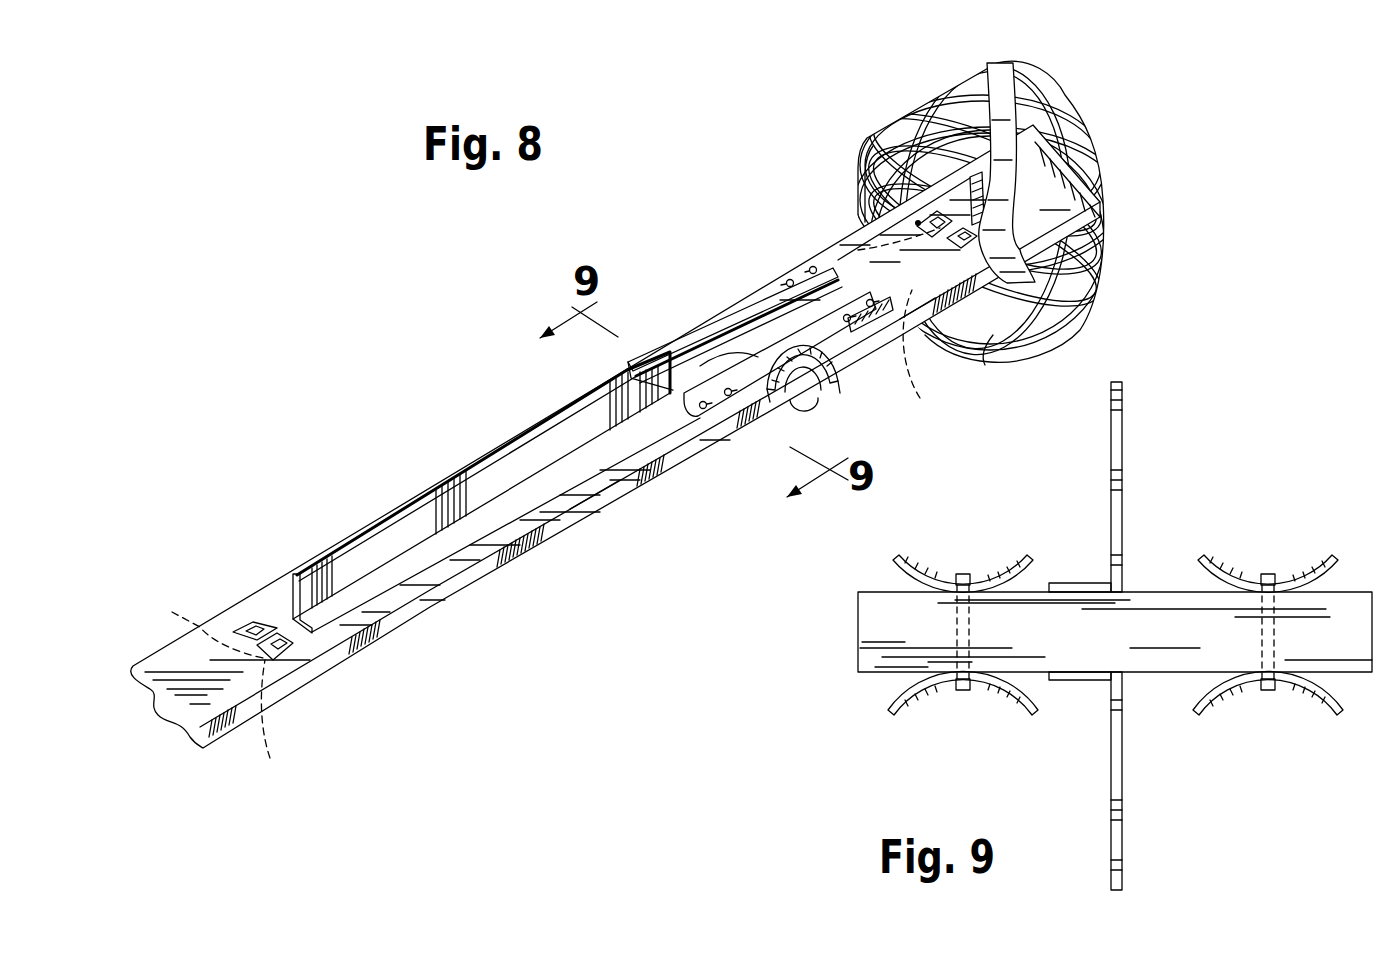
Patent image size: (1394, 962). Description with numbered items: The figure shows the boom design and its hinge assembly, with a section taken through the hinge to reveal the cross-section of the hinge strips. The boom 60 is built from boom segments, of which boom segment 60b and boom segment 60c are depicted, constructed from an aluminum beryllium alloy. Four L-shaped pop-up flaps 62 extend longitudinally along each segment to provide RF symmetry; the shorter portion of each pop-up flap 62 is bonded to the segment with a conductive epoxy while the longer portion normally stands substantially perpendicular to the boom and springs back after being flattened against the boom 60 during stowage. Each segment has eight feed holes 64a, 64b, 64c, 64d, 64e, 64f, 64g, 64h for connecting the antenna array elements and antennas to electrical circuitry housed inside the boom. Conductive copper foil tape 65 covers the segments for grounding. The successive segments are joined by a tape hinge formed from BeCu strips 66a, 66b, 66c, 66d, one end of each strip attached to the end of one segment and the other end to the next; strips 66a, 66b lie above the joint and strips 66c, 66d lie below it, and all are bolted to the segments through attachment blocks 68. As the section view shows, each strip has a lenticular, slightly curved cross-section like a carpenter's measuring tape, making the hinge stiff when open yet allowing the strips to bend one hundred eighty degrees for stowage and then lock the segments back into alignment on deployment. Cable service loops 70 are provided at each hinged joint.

In FIG. 8, the boom 60 is at (760, 422).
In FIG. 8, the boom segment 60b is at (908, 333).
In FIG. 8, the boom segment 60c is at (591, 520).
In FIG. 8, the pop-up flap 62 is at (400, 530).
In FIG. 9, the pop-up flap 62 is at (1121, 430).
In FIG. 8, the feed hole 64a is at (287, 653).
In FIG. 8, the feed hole 64b is at (248, 625).
In FIG. 8, the feed hole 64c is at (268, 720).
In FIG. 8, the feed hole 64d is at (195, 624).
In FIG. 8, the feed hole 64e is at (995, 335).
In FIG. 8, the feed hole 64f is at (860, 250).
In FIG. 8, the feed hole 64g is at (940, 325).
In FIG. 8, the feed hole 64h is at (838, 250).
In FIG. 8, the conductive copper foil tape 65 is at (420, 587).
In FIG. 8, the strip 66a is at (836, 360).
In FIG. 9, the strip 66a is at (908, 565).
In FIG. 8, the strip 66b is at (748, 308).
In FIG. 9, the strip 66b is at (1337, 554).
In FIG. 8, the strip 66c is at (770, 402).
In FIG. 9, the strip 66c is at (918, 697).
In FIG. 8, the strip 66d is at (708, 330).
In FIG. 9, the strip 66d is at (1339, 701).
In FIG. 8, the attachment block 68 is at (790, 284).
In FIG. 8, the cable service loop 70 is at (820, 392).